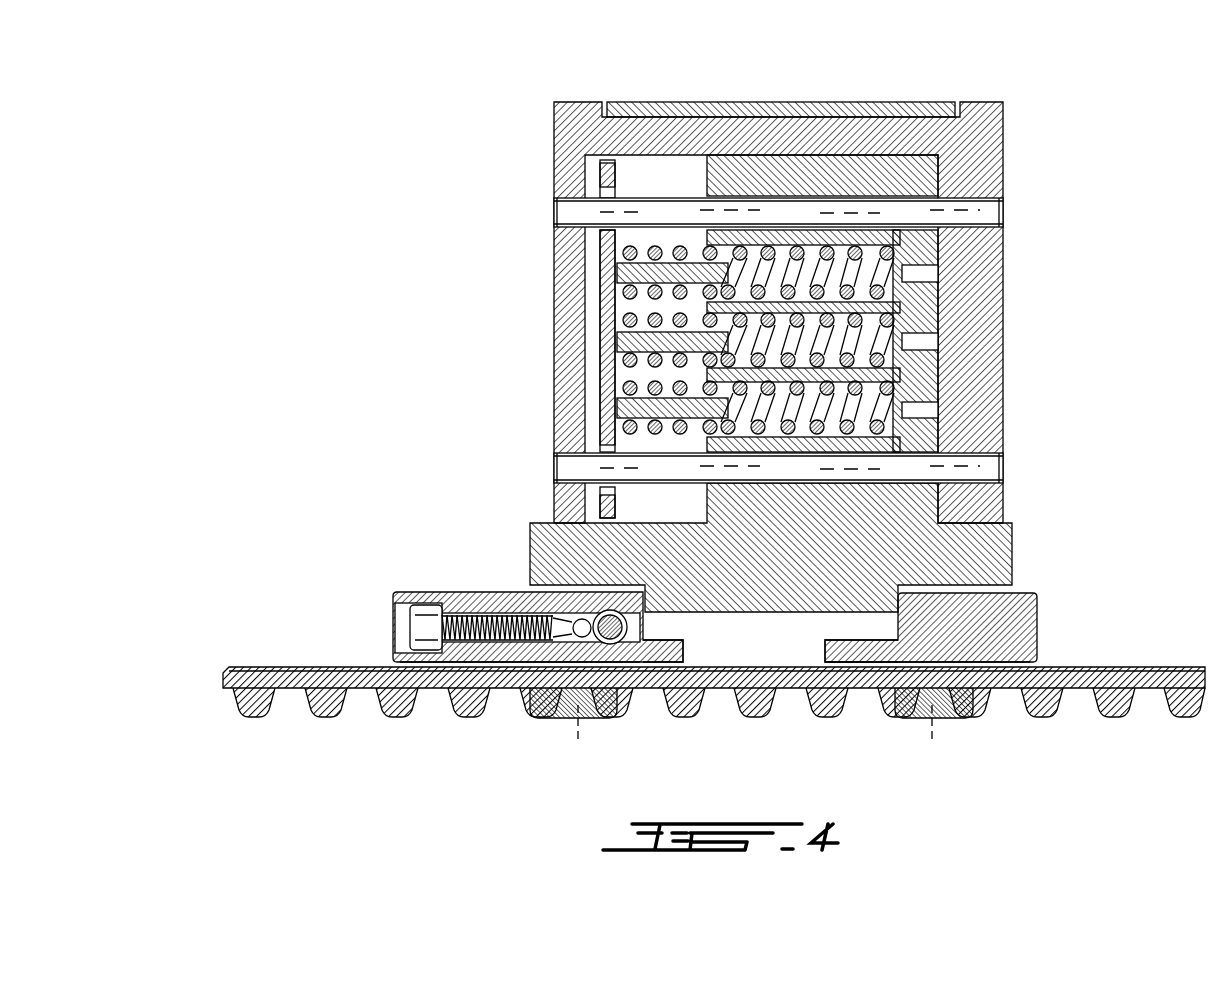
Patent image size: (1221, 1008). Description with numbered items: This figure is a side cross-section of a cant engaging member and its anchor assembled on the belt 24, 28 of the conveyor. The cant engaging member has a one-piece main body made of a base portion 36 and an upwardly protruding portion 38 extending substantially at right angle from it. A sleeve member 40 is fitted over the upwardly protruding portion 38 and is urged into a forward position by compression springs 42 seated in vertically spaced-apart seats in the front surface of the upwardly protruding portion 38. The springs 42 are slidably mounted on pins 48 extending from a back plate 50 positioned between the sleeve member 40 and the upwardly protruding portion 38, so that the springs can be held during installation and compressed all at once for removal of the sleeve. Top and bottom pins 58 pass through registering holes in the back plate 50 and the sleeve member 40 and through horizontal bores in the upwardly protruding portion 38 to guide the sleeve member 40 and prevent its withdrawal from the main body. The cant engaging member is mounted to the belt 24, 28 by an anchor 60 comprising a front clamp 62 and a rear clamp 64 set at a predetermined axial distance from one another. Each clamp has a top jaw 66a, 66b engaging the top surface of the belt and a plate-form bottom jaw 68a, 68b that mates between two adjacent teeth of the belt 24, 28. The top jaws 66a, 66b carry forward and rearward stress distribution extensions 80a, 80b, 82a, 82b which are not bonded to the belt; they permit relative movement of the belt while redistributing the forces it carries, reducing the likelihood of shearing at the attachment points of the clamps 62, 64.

The belt 24 is at (689, 644).
The belt 28 is at (255, 676).
The base portion 36 is at (987, 550).
The upwardly protruding portion 38 is at (850, 175).
The sleeve member 40 is at (987, 132).
The compression springs 42 is at (656, 246).
The pins 48 is at (668, 412).
The back plate 50 is at (605, 505).
The top and bottom pins 58 is at (987, 212).
The anchor 60 is at (741, 620).
The front clamp 62 is at (558, 729).
The rear clamp 64 is at (962, 729).
The top jaw 66a is at (485, 592).
The top jaw 66b is at (1040, 607).
The bottom jaw 68a is at (592, 722).
The bottom jaw 68b is at (905, 722).
The forward stress distribution extension 80a is at (472, 655).
The forward stress distribution extension 80b is at (830, 655).
The rearward stress distribution extension 82a is at (686, 650).
The rearward stress distribution extension 82b is at (1040, 645).